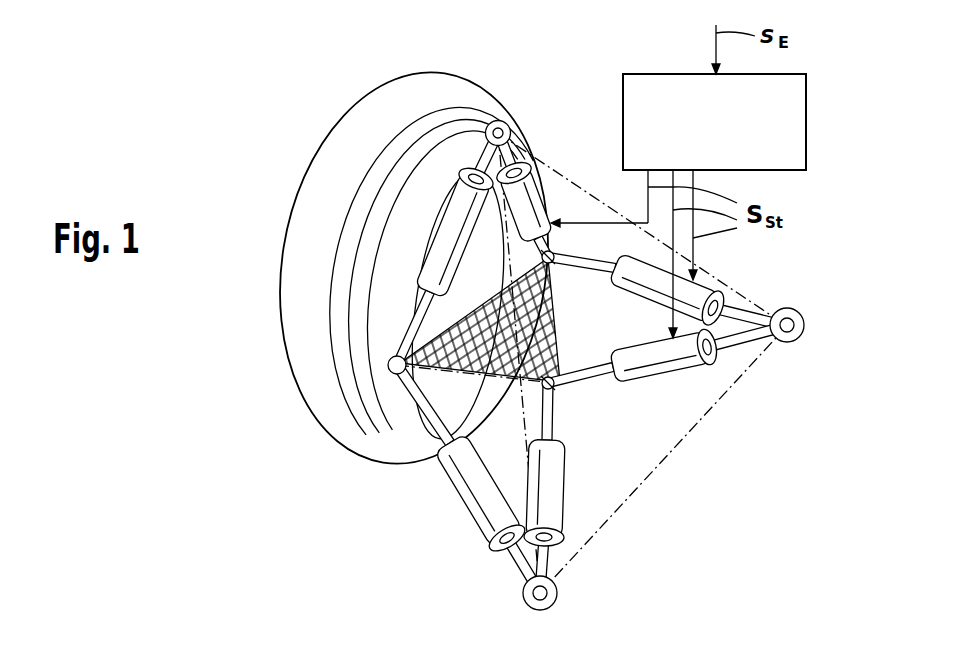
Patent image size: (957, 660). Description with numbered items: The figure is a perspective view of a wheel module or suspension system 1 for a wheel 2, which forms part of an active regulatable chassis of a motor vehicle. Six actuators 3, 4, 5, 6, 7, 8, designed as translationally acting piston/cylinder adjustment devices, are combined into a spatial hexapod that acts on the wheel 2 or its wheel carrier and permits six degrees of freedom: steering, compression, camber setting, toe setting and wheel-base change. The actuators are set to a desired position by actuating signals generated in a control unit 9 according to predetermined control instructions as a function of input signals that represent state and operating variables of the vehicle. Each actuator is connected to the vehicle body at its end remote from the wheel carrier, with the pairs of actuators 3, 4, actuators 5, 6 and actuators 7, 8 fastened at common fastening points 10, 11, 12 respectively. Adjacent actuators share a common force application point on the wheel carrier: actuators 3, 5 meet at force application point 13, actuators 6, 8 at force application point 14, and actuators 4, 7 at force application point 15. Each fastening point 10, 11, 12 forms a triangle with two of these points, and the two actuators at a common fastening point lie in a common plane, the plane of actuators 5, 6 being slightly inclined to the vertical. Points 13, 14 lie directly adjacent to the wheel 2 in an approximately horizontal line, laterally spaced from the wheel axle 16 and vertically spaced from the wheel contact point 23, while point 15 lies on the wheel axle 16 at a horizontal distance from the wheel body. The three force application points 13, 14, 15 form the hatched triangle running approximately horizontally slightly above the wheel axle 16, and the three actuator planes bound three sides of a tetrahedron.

The suspension system 1 is at (563, 86).
The wheel 2 is at (342, 193).
The actuator 3 is at (647, 283).
The actuator 4 is at (653, 358).
The actuator 5 is at (522, 198).
The actuator 6 is at (462, 297).
The actuator 7 is at (543, 477).
The actuator 8 is at (472, 493).
The control unit 9 is at (793, 122).
The common fastening point 10 is at (789, 308).
The common fastening point 11 is at (498, 120).
The common fastening point 12 is at (525, 600).
The force application point 13 is at (552, 250).
The force application point 14 is at (392, 367).
The force application point 15 is at (553, 400).
The wheel axle 16 is at (453, 203).
The wheel contact point 23 is at (364, 466).